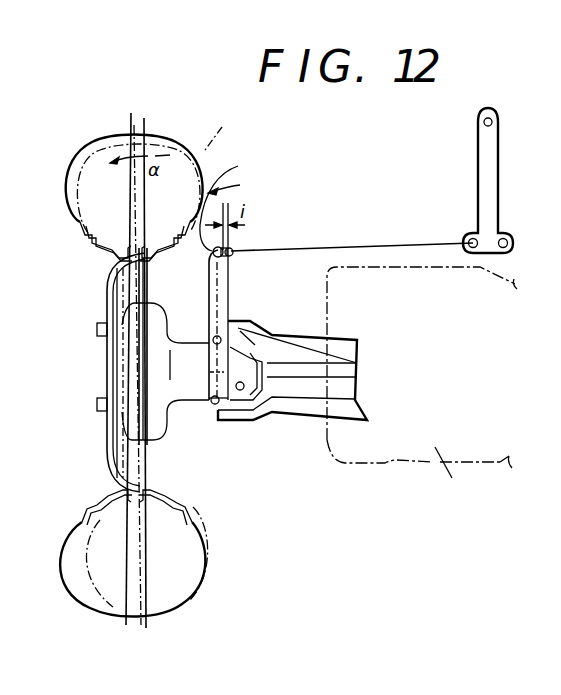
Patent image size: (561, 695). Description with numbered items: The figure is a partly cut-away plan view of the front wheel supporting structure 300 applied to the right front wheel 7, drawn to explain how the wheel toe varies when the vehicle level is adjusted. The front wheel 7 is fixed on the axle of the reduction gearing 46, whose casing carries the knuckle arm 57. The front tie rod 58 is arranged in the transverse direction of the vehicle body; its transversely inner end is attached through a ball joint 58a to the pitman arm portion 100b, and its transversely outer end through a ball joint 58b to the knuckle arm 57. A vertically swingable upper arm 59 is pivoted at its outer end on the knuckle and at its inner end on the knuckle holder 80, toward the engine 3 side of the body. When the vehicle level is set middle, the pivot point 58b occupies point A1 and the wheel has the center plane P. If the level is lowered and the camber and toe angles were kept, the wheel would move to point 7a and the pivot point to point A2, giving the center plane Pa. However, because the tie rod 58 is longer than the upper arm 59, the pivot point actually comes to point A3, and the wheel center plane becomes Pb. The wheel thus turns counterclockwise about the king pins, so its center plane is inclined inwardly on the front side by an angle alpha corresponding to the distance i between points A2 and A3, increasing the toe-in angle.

The front wheel 7 is at (82, 216).
The point of front wheel at low vehicle level 7a is at (227, 134).
The reduction gearing 46 is at (195, 388).
The knuckle arm 57 is at (210, 306).
The front tie rod 58 is at (350, 244).
The ball joint 58a is at (472, 240).
The ball joint 58b is at (241, 200).
The upper arm 59 is at (307, 368).
The knuckle holder 80 is at (322, 410).
The pitman arm portion 100b is at (478, 160).
The front wheel supporting structure 300 is at (262, 497).
The engine 3 is at (443, 477).
The center plane of front wheel at middle level P is at (131, 128).
The center plane of front wheel at point 7a Pa is at (144, 123).
The center plane of front wheel at point A3 Pb is at (134, 125).
The point A1 is at (215, 255).
The point A2 is at (233, 250).
The point A3 is at (232, 256).